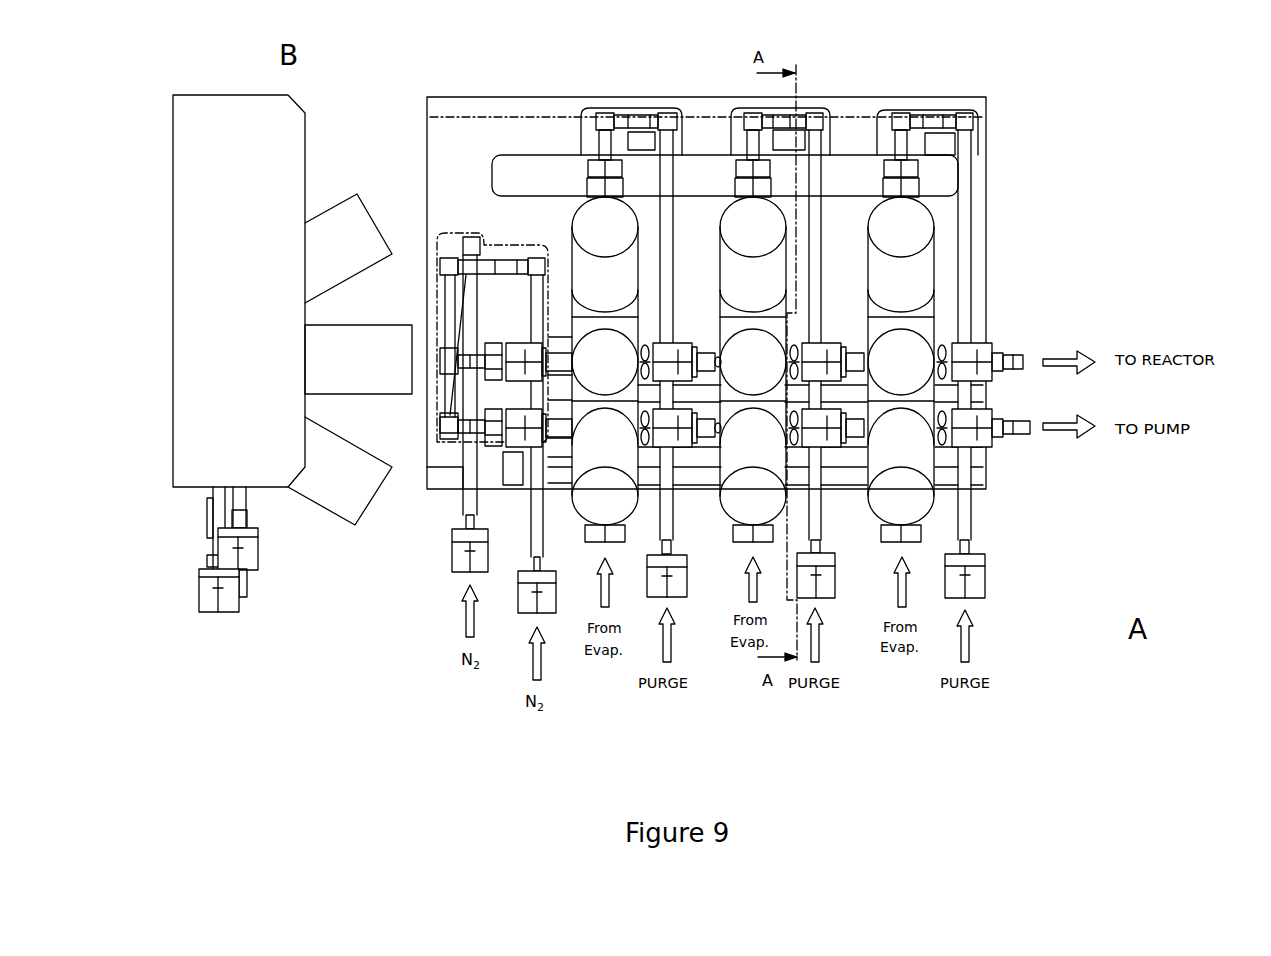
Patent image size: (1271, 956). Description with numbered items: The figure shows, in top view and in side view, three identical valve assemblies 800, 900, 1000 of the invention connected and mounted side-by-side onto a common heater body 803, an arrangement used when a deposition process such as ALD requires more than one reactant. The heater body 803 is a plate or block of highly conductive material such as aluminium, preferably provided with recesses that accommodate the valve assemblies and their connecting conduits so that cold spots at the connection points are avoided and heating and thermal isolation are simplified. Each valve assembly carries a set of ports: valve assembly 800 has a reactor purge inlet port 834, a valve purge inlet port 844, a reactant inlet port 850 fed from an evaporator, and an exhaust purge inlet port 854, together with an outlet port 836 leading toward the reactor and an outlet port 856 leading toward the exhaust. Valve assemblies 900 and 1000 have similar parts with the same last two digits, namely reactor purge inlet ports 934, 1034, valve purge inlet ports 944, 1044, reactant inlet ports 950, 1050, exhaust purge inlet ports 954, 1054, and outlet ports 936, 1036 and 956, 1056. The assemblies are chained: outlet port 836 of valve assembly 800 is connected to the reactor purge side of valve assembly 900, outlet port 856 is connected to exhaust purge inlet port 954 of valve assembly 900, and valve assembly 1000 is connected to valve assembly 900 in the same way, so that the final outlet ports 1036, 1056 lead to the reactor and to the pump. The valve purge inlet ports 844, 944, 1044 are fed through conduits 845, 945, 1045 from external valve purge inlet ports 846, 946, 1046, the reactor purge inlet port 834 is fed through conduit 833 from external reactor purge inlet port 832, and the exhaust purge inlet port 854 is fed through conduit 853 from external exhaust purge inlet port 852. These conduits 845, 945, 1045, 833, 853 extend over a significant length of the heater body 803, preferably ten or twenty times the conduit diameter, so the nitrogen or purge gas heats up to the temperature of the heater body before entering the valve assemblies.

In FIG. 9A, the heater body 803 is at (845, 97).
In FIG. 9B, the heater body 803 is at (172, 214).
In FIG. 9A, the valve assembly 800 is at (614, 278).
In FIG. 9A, the valve assembly 900 is at (763, 278).
In FIG. 9A, the valve assembly 1000 is at (921, 279).
In FIG. 9A, the valve purge inlet port 844 is at (587, 186).
In FIG. 9A, the valve purge inlet port 944 is at (735, 187).
In FIG. 9A, the valve purge inlet port 1044 is at (882, 188).
In FIG. 9A, the reactor purge inlet port 834 is at (527, 340).
In FIG. 9A, the reactor purge inlet port 934 is at (680, 342).
In FIG. 9A, the reactor purge inlet port 1034 is at (830, 342).
In FIG. 9A, the outlet port 836 is at (642, 348).
In FIG. 9A, the outlet port 936 is at (790, 347).
In FIG. 9A, the outlet port 1036 is at (935, 345).
In FIG. 9A, the outlet port 856 is at (643, 415).
In FIG. 9A, the outlet port 956 is at (790, 415).
In FIG. 9A, the outlet port 1056 is at (932, 417).
In FIG. 9A, the exhaust purge inlet port 854 is at (525, 449).
In FIG. 9A, the exhaust purge inlet port 954 is at (685, 447).
In FIG. 9A, the exhaust purge inlet port 1054 is at (832, 448).
In FIG. 9A, the conduit 853 is at (463, 497).
In FIG. 9A, the external exhaust purge inlet port 852 is at (457, 575).
In FIG. 9A, the conduit 833 is at (543, 498).
In FIG. 9A, the external reactor purge inlet port 832 is at (556, 613).
In FIG. 9A, the reactant inlet port 850 is at (587, 537).
In FIG. 9A, the conduit 845 is at (673, 500).
In FIG. 9A, the external valve purge inlet port 846 is at (687, 597).
In FIG. 9A, the reactant inlet port 950 is at (733, 530).
In FIG. 9A, the conduit 945 is at (822, 502).
In FIG. 9A, the external valve purge inlet port 946 is at (835, 587).
In FIG. 9A, the reactant inlet port 1050 is at (882, 535).
In FIG. 9A, the conduit 1045 is at (972, 523).
In FIG. 9A, the external valve purge inlet port 1046 is at (985, 583).